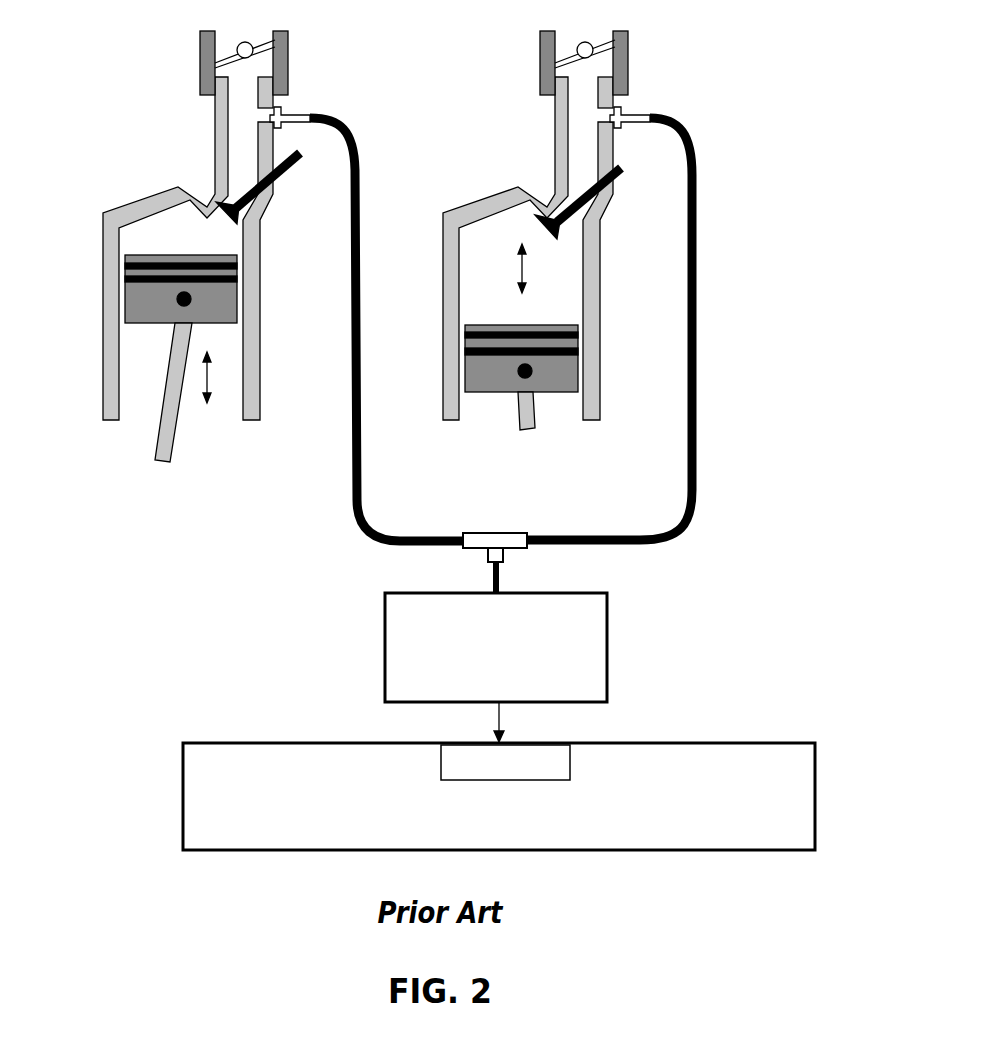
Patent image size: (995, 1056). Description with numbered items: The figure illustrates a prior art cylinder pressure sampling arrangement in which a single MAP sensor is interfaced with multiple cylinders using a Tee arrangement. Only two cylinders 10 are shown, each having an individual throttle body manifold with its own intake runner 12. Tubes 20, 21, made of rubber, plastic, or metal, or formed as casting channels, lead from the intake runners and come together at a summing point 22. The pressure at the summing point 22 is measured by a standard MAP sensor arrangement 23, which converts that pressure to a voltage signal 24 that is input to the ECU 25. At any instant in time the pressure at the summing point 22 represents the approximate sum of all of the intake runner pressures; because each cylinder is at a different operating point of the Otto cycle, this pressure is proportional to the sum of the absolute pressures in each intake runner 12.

The cylinder 10 is at (99, 83).
The intake runner 12 is at (212, 133).
The tube 20 is at (312, 116).
The tube 21 is at (660, 116).
The summing point 22 is at (504, 561).
The MAP sensor arrangement 23 is at (605, 660).
The voltage signal 24 is at (493, 728).
The ECU 25 is at (733, 742).